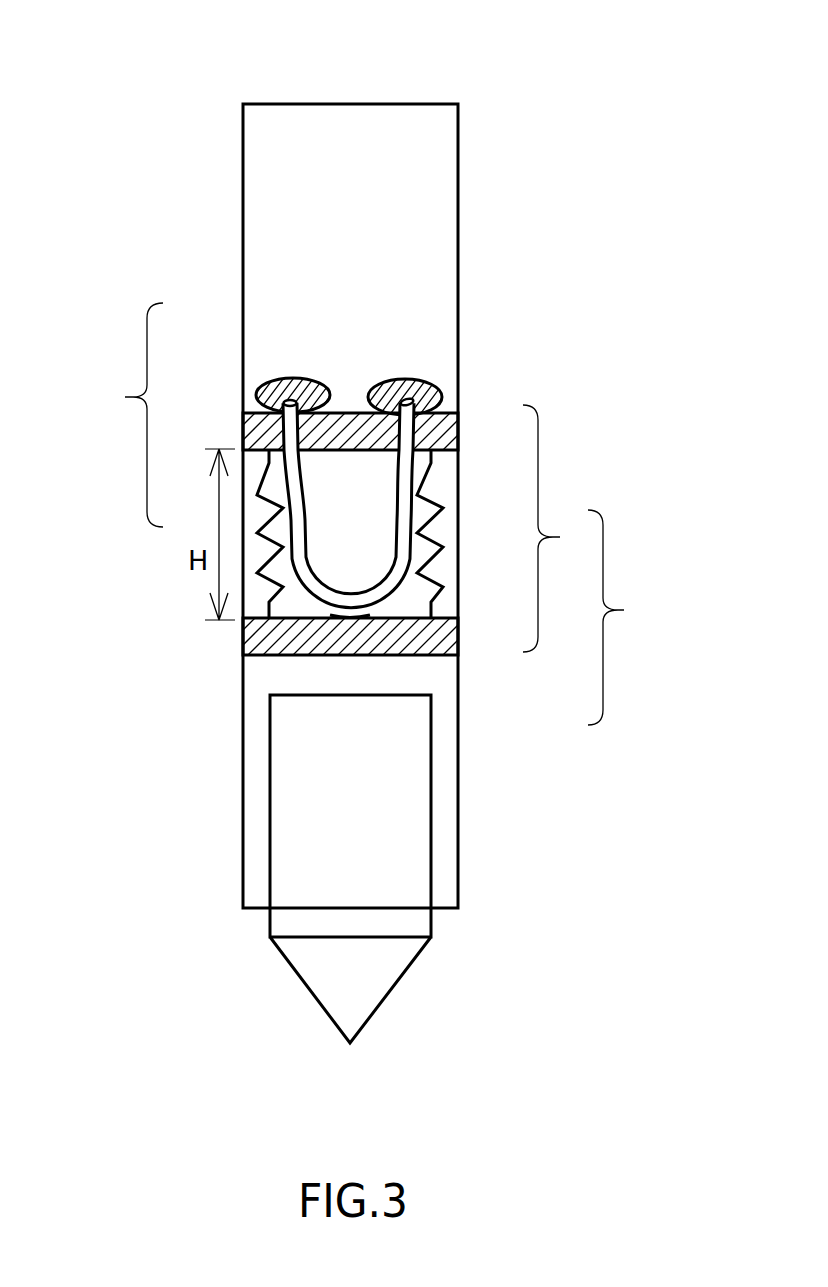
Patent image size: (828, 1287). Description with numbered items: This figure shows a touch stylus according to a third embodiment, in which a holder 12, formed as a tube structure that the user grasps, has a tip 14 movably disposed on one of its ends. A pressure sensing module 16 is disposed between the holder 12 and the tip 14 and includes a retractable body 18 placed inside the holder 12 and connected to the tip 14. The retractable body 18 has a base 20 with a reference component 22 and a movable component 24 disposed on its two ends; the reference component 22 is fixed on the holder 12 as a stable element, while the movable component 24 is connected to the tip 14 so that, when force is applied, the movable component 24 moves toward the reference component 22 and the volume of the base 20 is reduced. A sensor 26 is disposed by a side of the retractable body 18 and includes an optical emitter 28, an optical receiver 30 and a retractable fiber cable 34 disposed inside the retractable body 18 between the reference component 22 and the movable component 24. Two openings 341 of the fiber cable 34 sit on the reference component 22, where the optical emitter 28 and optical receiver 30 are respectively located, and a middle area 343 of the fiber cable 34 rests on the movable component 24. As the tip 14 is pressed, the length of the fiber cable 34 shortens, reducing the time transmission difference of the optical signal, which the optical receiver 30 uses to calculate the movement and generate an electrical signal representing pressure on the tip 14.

The holder 12 is at (448, 177).
The tip 14 is at (382, 967).
The pressure sensing module 16 is at (622, 617).
The retractable body 18 is at (558, 528).
The base 20 is at (440, 516).
The reference component 22 is at (453, 425).
The movable component 24 is at (455, 625).
The sensor 26 is at (562, 702).
The optical emitter 28 is at (275, 381).
The optical receiver 30 is at (385, 380).
The retractable fiber cable 34 is at (293, 500).
The openings 341 is at (285, 403).
The middle area 343 is at (348, 610).